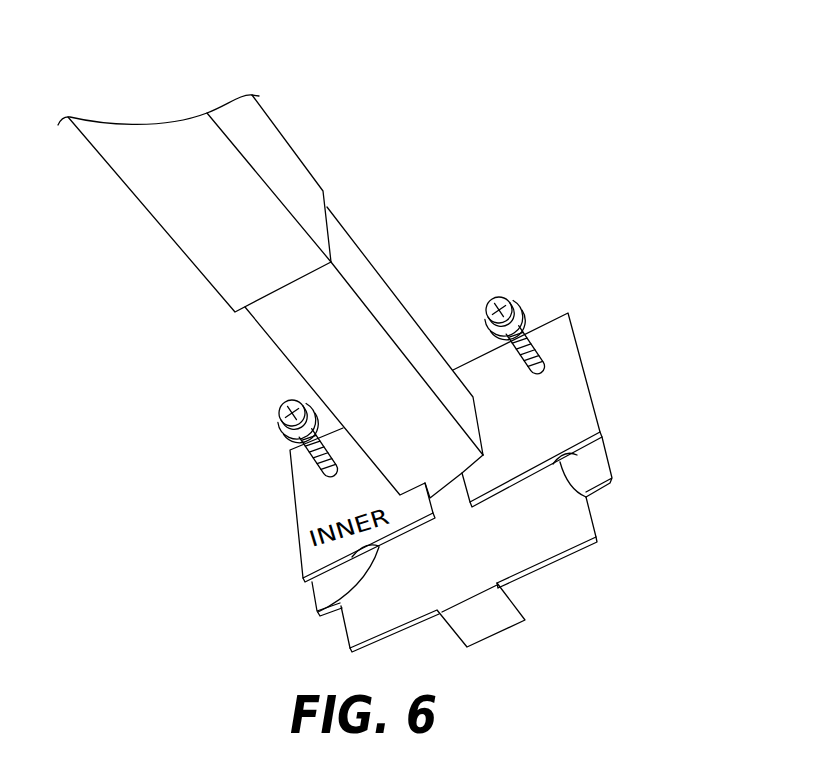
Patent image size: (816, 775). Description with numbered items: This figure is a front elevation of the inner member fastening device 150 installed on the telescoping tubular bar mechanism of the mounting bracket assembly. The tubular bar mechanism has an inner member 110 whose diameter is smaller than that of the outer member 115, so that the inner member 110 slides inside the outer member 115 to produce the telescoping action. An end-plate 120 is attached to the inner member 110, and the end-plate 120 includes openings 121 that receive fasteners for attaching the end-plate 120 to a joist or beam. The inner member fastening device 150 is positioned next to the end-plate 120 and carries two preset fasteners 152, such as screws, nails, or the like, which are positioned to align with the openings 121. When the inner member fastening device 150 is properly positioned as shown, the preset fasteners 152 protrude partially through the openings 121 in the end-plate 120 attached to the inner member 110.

The inner member 110 is at (380, 274).
The outer member 115 is at (313, 176).
The end-plate 120 is at (609, 464).
The openings 121 is at (317, 606).
The inner member fastening device 150 is at (583, 365).
The preset fasteners 152 is at (284, 438).